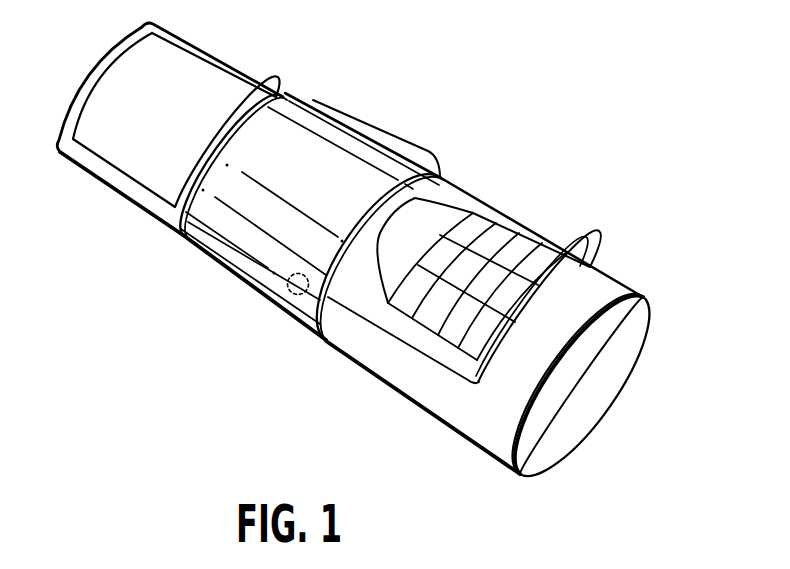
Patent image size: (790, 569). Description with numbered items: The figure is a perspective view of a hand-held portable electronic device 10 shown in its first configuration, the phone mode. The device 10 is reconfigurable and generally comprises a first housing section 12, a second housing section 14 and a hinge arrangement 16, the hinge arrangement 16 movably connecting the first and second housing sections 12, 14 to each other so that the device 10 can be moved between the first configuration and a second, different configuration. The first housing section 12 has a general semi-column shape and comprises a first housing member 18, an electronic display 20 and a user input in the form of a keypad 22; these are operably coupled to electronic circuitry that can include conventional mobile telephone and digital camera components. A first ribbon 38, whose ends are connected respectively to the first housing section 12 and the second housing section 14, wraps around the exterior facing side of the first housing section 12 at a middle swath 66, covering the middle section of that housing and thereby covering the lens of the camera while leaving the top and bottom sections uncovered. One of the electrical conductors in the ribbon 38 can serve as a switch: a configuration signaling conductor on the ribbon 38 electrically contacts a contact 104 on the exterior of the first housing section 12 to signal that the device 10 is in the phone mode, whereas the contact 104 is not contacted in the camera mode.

The hand-held portable electronic device 10 is at (360, 247).
The first housing section 12 is at (500, 334).
The second housing section 14 is at (603, 397).
The hinge arrangement 16 is at (311, 226).
The first housing member 18 is at (87, 75).
The electronic display 20 is at (165, 55).
The keypad 22 is at (515, 230).
The first ribbon 38 is at (283, 123).
The middle swath 66 is at (381, 130).
The contact 104 is at (289, 296).